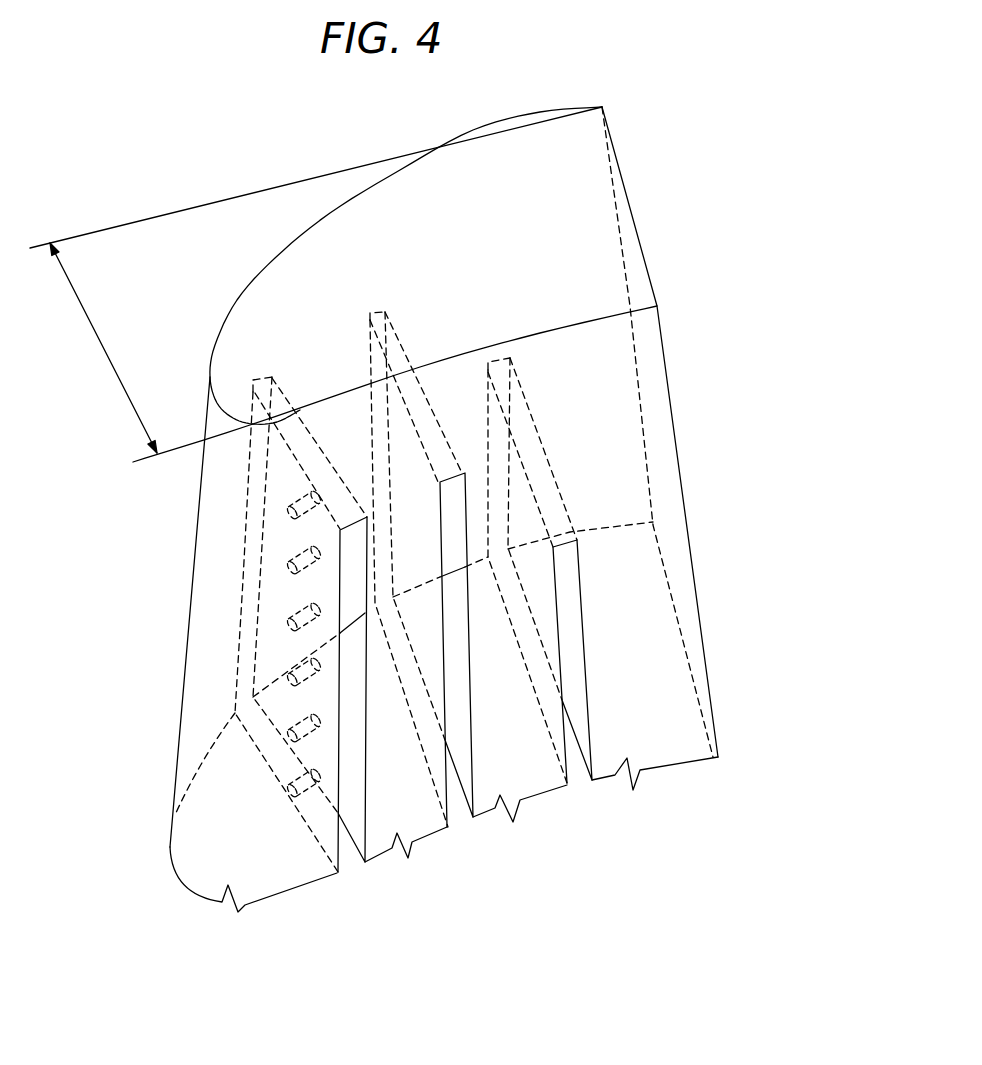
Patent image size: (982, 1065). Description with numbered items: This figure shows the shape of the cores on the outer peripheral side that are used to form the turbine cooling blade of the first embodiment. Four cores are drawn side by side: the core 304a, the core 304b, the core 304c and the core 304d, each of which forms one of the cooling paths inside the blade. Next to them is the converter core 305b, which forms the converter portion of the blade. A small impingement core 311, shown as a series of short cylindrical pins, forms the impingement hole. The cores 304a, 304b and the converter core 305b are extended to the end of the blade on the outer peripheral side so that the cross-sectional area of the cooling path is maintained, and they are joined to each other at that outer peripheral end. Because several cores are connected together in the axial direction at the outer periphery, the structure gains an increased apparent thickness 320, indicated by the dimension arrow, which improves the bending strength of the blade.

The apparent thickness 320 is at (316, 280).
The impingement core 311 is at (283, 620).
The converter core 305b is at (532, 445).
The core 304a is at (268, 870).
The core 304b is at (407, 805).
The core 304c is at (522, 768).
The core 304d is at (660, 737).